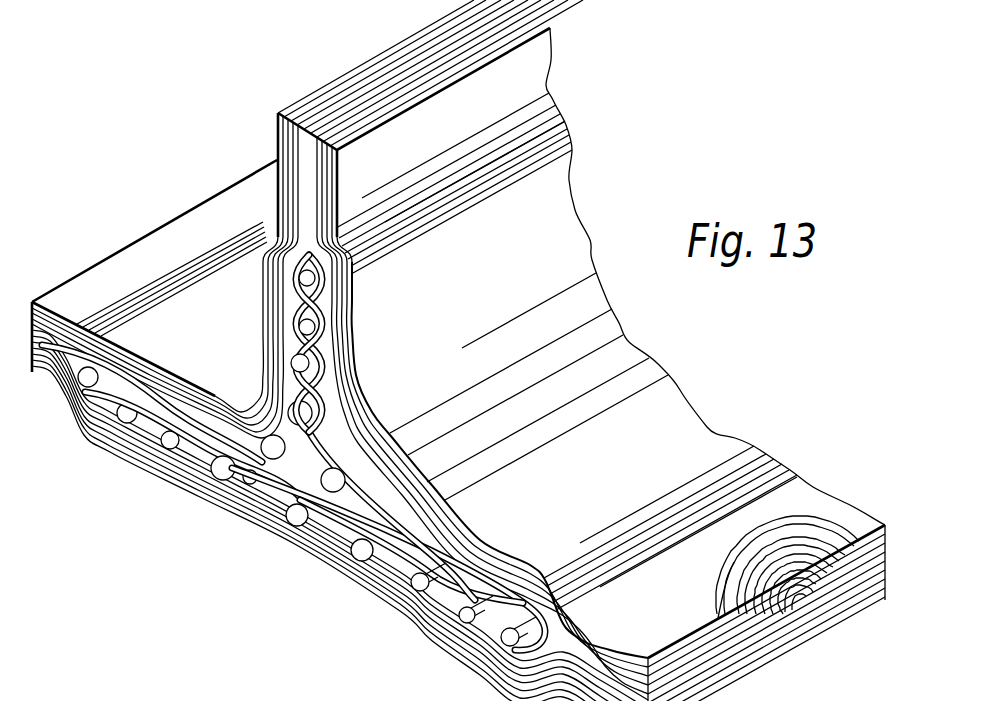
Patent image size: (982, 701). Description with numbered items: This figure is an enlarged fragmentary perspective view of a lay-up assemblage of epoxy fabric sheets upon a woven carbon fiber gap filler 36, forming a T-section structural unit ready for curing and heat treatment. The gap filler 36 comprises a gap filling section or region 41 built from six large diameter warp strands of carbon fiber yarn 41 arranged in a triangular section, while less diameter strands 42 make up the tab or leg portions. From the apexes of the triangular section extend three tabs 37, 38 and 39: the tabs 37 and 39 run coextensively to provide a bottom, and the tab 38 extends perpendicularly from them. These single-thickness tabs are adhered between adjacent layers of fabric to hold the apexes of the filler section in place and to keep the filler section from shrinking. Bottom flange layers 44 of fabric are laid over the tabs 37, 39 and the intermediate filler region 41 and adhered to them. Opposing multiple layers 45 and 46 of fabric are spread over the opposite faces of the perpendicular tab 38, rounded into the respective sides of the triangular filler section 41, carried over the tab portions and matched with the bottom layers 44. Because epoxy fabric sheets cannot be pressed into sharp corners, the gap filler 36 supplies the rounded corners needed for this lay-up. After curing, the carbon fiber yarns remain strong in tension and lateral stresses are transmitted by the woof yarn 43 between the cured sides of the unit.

The gap filler 36 is at (226, 466).
The tab 37 is at (157, 428).
The tab 38 is at (321, 332).
The tab 39 is at (457, 588).
The gap filling section 41 is at (293, 517).
The less diameter strands 42 is at (510, 640).
The woof yarn 43 is at (350, 522).
The bottom flange layers 44 is at (337, 525).
The multiple layers of fabric 45 is at (277, 228).
The multiple layers of fabric 46 is at (583, 277).